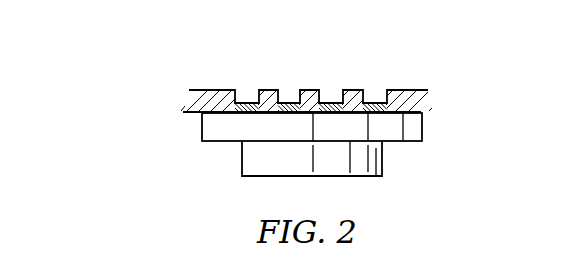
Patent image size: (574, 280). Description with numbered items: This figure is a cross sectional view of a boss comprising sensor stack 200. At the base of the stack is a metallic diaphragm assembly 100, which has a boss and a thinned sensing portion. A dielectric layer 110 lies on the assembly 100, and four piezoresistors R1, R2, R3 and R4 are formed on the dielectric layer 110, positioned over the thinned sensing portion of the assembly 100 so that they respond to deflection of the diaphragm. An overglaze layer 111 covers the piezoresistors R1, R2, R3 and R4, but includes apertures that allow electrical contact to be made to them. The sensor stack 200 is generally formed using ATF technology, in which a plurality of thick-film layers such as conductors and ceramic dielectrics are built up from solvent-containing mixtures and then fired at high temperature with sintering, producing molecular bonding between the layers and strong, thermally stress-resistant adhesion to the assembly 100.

The sensor stack 200 is at (137, 99).
The metallic diaphragm assembly 100 is at (185, 113).
The dielectric layer 110 is at (424, 127).
The overglaze layer 111 is at (430, 98).
The piezoresistor R1 is at (249, 102).
The piezoresistor R2 is at (290, 102).
The piezoresistor R3 is at (332, 102).
The piezoresistor R4 is at (379, 102).